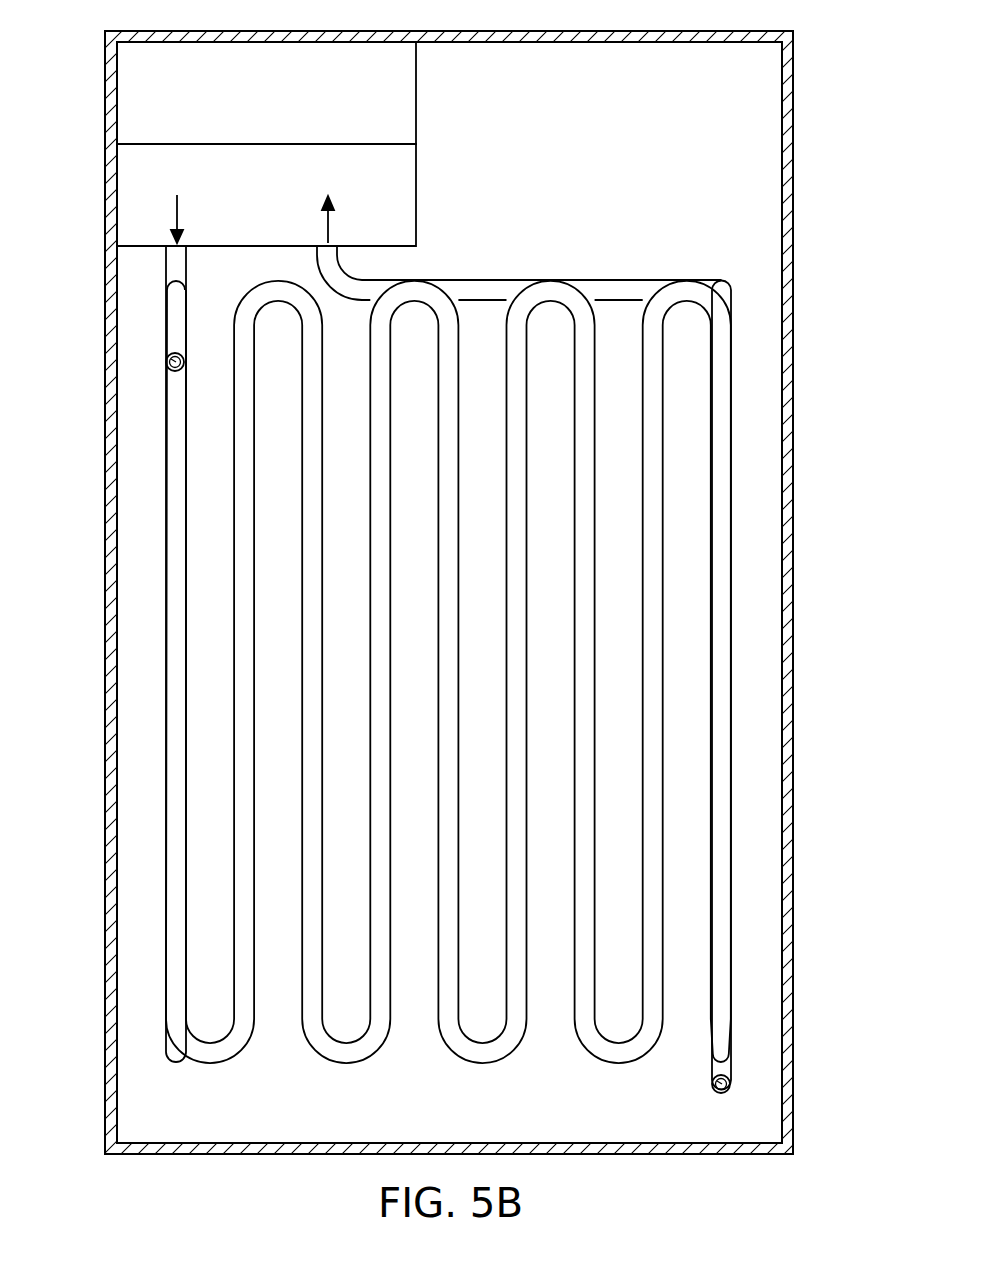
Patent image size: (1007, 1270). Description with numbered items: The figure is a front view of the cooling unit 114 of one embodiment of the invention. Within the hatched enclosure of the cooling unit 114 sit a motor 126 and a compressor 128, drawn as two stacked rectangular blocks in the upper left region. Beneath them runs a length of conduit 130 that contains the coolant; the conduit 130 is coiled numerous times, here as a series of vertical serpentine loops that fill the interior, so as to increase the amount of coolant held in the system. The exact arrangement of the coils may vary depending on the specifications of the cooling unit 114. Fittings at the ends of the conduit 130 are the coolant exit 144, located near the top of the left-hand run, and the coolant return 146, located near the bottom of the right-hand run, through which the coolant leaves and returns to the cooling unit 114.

The cooling unit 114 is at (861, 40).
The motor 126 is at (288, 104).
The compressor 128 is at (288, 210).
The conduit 130 is at (166, 642).
The coolant exit 144 is at (167, 357).
The coolant return 146 is at (730, 1087).